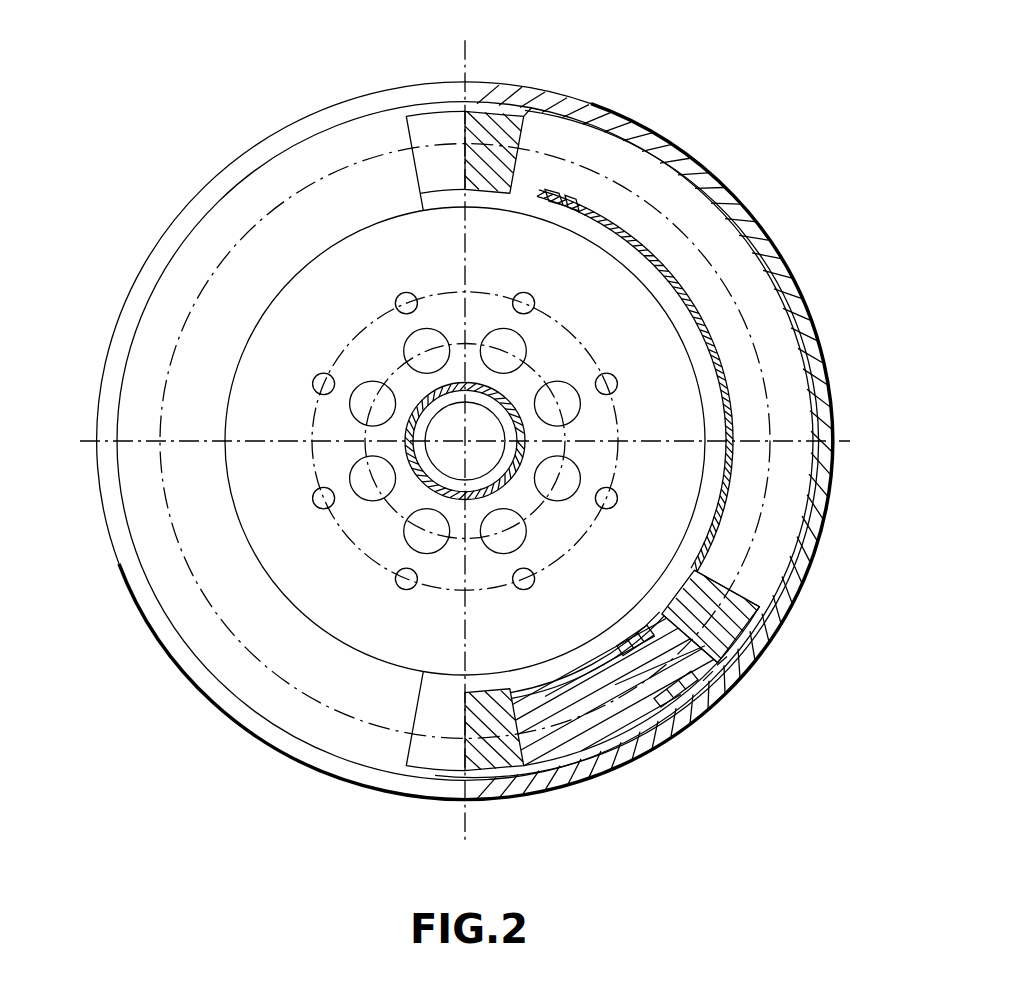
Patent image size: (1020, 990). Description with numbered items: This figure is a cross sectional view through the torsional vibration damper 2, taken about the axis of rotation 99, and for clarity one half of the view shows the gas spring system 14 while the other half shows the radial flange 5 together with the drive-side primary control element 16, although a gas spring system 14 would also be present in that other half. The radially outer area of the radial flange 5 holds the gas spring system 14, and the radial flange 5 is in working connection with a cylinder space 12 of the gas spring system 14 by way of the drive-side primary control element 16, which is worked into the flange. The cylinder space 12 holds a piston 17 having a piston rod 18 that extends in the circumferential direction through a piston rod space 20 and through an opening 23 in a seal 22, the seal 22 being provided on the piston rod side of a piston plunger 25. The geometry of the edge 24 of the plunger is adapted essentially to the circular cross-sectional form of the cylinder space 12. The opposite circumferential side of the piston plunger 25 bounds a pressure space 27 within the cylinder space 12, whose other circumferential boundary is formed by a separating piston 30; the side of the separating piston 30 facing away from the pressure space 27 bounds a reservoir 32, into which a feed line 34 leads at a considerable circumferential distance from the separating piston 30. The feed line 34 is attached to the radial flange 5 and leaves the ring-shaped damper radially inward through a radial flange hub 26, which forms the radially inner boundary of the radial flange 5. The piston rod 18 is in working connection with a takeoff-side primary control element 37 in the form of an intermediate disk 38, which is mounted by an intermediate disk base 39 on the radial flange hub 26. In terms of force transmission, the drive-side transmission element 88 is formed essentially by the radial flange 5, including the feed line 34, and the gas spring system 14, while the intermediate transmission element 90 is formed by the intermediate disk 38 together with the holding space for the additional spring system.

The torsional vibration damper 2 is at (612, 88).
The radial flange 5 is at (188, 262).
The cylinder space 12 is at (798, 308).
The gas spring system 14 is at (830, 375).
The drive-side primary control element 16 is at (320, 155).
The piston 17 is at (735, 578).
The piston rod 18 is at (603, 733).
The piston rod space 20 is at (535, 772).
The seal 22 is at (705, 700).
The opening 23 is at (673, 722).
The edge of the plunger 24 is at (735, 695).
The piston plunger 25 is at (750, 677).
The radial flange hub 26 is at (458, 446).
The pressure space 27 is at (715, 667).
The separating piston 30 is at (740, 637).
The reservoir 32 is at (745, 268).
The feed line 34 is at (625, 230).
The takeoff-side primary control element 37 is at (423, 762).
The intermediate disk 38 is at (317, 608).
The intermediate disk base 39 is at (413, 448).
The drive-side transmission element 88 is at (655, 122).
The intermediate transmission element 90 is at (290, 392).
The axis of rotation 99 is at (425, 465).